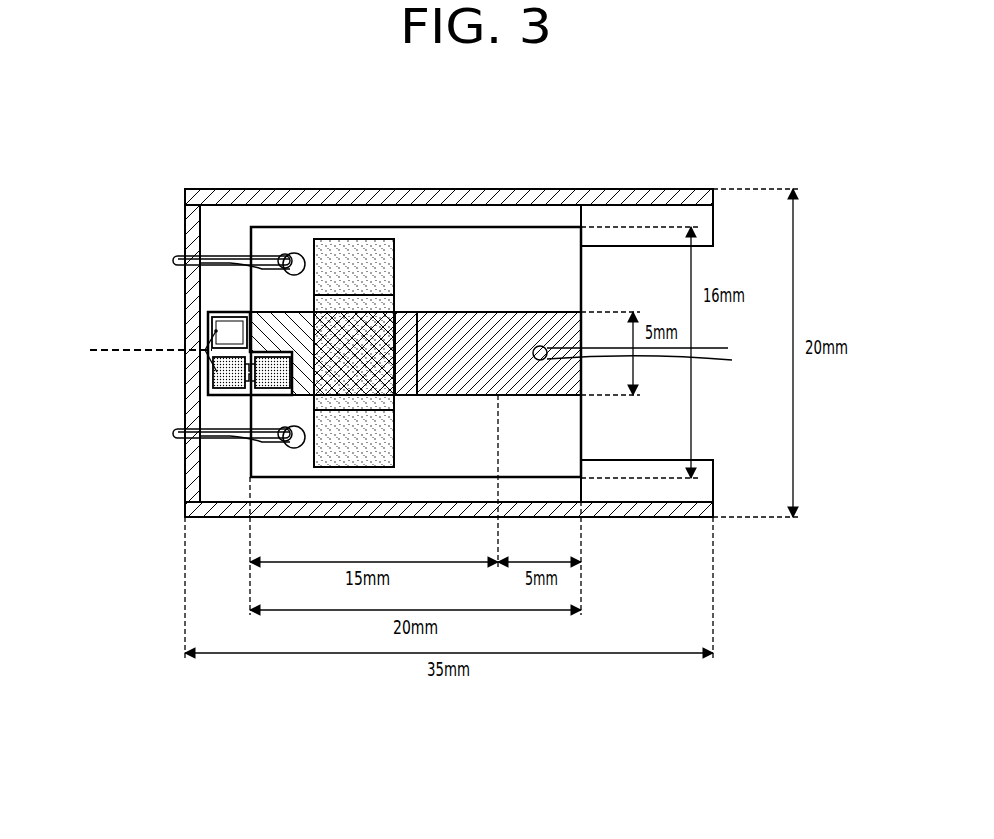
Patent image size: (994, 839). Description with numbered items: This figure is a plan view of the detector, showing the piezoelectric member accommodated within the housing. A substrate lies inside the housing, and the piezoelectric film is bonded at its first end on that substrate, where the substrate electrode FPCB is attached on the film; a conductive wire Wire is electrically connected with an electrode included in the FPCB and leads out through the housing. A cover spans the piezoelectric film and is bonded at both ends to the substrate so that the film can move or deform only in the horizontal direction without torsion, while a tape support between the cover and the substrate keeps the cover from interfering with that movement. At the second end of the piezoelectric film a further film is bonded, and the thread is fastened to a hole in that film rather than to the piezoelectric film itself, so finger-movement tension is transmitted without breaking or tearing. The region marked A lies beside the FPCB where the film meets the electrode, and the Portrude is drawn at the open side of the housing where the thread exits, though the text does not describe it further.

The PVDF film wrap region A is at (282, 353).
The protrude Portrude is at (669, 213).
The substrate electrode FPCB is at (218, 373).
The conductive wire Wire is at (116, 352).